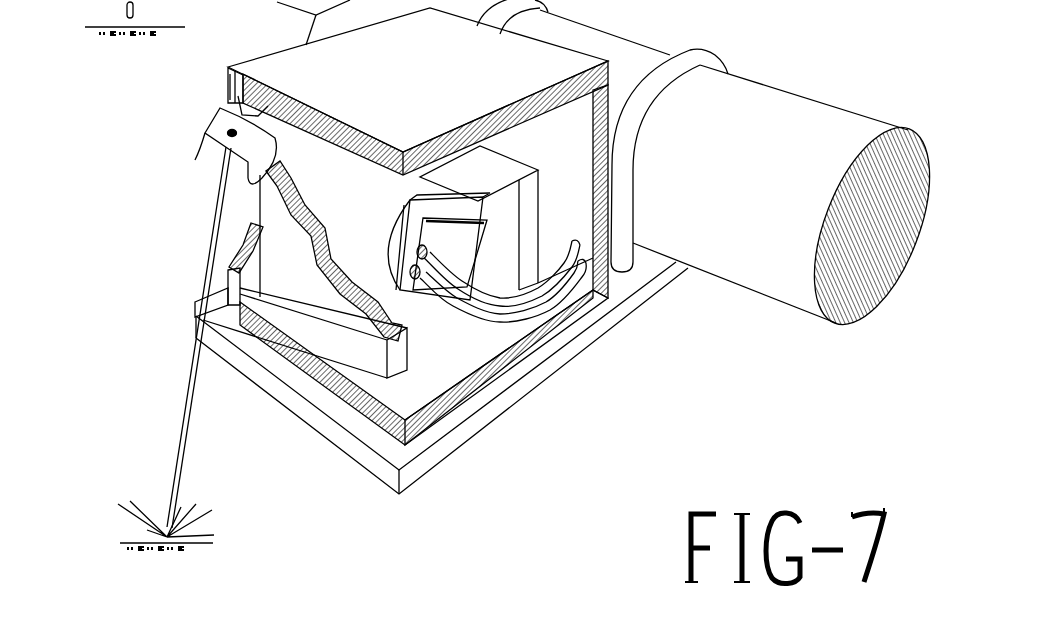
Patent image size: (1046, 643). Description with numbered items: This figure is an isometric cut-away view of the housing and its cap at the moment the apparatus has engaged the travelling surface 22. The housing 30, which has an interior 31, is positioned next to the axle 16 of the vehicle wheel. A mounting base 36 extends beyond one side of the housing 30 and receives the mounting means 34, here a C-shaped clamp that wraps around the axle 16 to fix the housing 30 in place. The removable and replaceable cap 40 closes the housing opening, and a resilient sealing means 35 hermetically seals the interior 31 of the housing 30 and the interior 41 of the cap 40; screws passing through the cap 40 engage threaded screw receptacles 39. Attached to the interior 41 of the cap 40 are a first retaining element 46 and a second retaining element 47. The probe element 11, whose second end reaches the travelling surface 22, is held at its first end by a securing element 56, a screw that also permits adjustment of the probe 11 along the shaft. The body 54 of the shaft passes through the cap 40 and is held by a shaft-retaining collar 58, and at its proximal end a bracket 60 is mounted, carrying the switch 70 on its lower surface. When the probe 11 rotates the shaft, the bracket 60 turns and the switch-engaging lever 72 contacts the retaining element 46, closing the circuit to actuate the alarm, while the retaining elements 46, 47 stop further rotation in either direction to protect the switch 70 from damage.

The probe element 11 is at (182, 430).
The axle 16 is at (748, 197).
The travelling surface 22 is at (86, 21).
The housing 30 is at (435, 383).
The interior 31 is at (551, 158).
The mounting means 34 is at (703, 50).
The resilient sealing means 35 is at (228, 67).
The mounting base 36 is at (647, 297).
The threaded screw receptacles 39 is at (254, 112).
The cap 40 is at (228, 88).
The interior 41 is at (273, 122).
The retaining element 46 is at (456, 182).
The second retaining element 47 is at (300, 197).
The body 54 is at (217, 147).
The securing element 56 is at (208, 128).
The shaft-retaining collar 58 is at (258, 178).
The bracket 60 is at (417, 200).
The switch 70 is at (446, 251).
The switch-engaging lever 72 is at (484, 221).